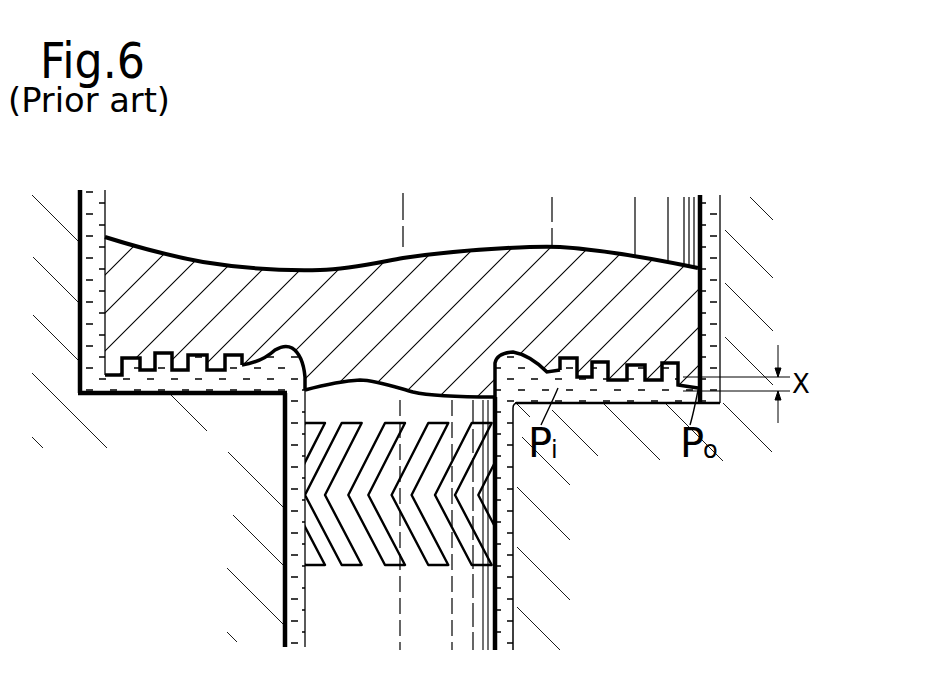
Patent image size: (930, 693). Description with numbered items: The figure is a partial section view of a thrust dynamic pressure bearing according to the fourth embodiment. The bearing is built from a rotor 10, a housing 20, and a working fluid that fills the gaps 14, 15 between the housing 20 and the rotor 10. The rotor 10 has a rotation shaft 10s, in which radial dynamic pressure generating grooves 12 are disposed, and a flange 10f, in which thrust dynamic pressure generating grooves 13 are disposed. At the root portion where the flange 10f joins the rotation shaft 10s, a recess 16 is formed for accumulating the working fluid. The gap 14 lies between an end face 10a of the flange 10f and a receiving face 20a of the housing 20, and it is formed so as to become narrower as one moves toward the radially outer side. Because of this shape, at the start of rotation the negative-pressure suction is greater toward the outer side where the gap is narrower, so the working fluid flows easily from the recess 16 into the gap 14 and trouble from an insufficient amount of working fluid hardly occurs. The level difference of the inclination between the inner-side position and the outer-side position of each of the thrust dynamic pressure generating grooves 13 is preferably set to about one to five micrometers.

The rotor 10 is at (117, 297).
The end face 10a is at (128, 399).
The flange 10f is at (638, 283).
The rotation shaft 10s is at (452, 626).
The radial dynamic pressure generating grooves 12 is at (465, 545).
The thrust dynamic pressure generating grooves 13 is at (200, 362).
The gap 14 is at (612, 385).
The gap 15 is at (712, 253).
The recess 16 is at (289, 352).
The housing 20 is at (136, 418).
The receiving face 20a is at (152, 378).